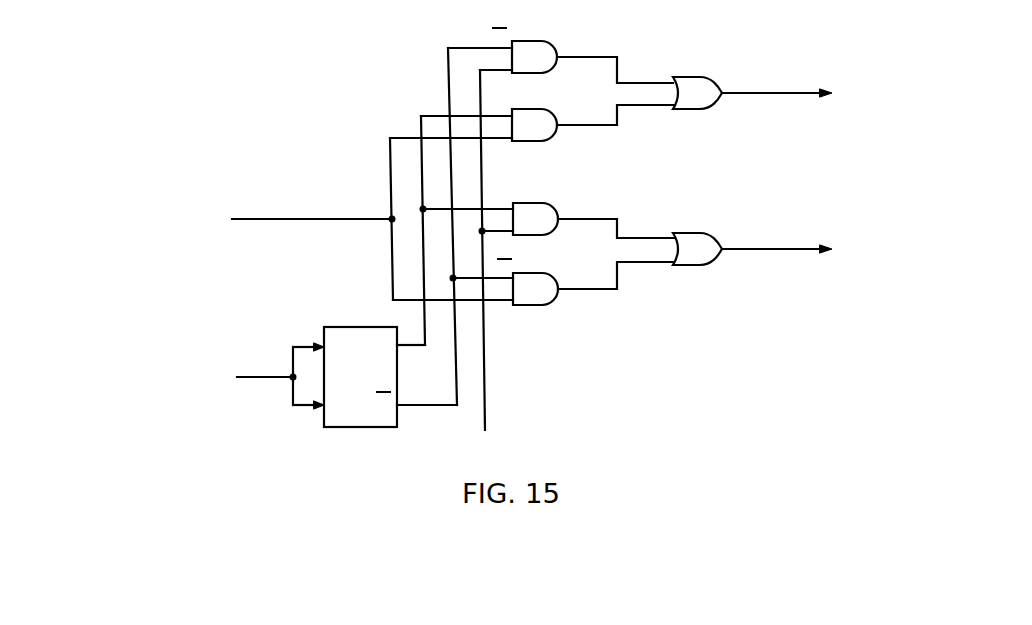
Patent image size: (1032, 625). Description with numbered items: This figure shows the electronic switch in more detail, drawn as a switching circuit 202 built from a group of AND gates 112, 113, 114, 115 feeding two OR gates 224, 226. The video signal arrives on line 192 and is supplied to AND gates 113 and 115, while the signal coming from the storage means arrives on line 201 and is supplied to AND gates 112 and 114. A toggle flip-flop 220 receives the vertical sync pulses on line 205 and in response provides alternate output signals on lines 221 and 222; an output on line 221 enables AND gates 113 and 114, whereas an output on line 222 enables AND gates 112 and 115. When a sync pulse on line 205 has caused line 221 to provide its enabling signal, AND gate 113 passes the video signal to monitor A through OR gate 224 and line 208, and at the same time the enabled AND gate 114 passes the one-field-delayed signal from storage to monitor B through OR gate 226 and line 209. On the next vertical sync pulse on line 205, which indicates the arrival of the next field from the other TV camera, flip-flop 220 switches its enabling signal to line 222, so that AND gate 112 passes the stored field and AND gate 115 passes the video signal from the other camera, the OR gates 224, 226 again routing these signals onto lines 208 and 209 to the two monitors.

The AND gate 112 is at (540, 43).
The AND gate 113 is at (538, 109).
The AND gate 114 is at (553, 203).
The AND gate 115 is at (553, 273).
The video signal line 192 is at (320, 219).
The storage signal line 201 is at (486, 420).
The switching circuit 202 is at (640, 188).
The vertical sync pulse line 205 is at (292, 377).
The monitor A output line 208 is at (784, 95).
The monitor B output line 209 is at (784, 251).
The toggle flip-flop 220 is at (372, 327).
The flip-flop output line 221 is at (428, 346).
The flip-flop output line 222 is at (447, 405).
The OR gate 224 is at (706, 78).
The OR gate 226 is at (705, 234).